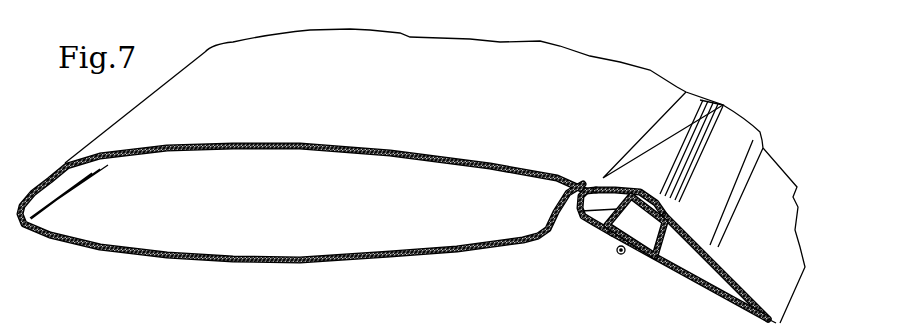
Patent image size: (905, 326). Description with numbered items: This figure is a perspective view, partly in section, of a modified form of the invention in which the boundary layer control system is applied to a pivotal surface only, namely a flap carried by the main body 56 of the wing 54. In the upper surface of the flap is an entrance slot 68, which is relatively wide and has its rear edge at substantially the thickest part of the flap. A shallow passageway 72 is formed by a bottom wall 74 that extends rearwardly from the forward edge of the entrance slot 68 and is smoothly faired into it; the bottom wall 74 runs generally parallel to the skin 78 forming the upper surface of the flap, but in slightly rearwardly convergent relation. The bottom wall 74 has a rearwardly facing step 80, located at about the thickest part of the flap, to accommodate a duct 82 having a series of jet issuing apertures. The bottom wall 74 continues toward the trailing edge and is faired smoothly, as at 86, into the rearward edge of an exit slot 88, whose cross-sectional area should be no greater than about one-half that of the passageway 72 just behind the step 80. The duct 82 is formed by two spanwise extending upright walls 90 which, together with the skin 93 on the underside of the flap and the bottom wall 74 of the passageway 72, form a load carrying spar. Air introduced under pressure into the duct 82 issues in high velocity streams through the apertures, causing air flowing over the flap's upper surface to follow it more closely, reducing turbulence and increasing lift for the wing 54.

The wing 54 is at (126, 129).
The main body 56 is at (204, 64).
The entrance slot 68 is at (659, 197).
The passageway 72 is at (680, 233).
The bottom wall 74 is at (695, 253).
The skin 78 is at (662, 208).
The rearwardly facing step 80 is at (673, 221).
The duct 82 is at (640, 242).
The faired portion 86 is at (707, 248).
The exit slot 88 is at (732, 198).
The upright walls 90 is at (614, 218).
The skin on the underside of the flap 93 is at (666, 268).